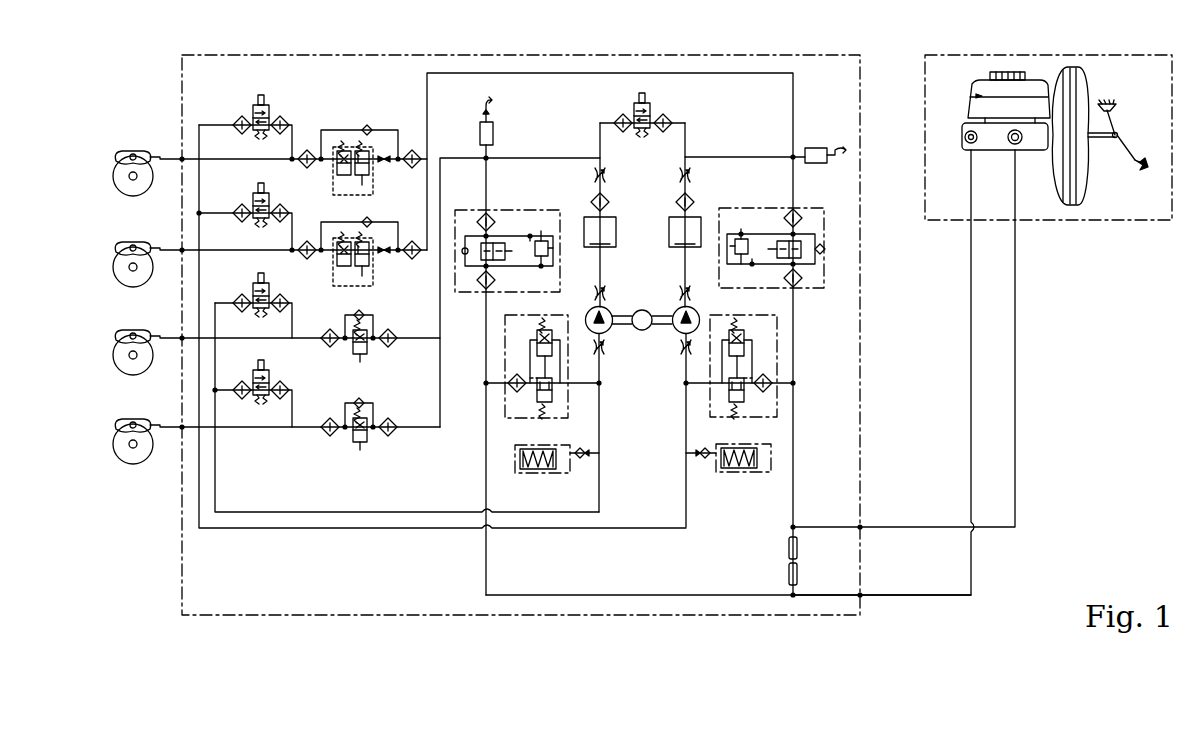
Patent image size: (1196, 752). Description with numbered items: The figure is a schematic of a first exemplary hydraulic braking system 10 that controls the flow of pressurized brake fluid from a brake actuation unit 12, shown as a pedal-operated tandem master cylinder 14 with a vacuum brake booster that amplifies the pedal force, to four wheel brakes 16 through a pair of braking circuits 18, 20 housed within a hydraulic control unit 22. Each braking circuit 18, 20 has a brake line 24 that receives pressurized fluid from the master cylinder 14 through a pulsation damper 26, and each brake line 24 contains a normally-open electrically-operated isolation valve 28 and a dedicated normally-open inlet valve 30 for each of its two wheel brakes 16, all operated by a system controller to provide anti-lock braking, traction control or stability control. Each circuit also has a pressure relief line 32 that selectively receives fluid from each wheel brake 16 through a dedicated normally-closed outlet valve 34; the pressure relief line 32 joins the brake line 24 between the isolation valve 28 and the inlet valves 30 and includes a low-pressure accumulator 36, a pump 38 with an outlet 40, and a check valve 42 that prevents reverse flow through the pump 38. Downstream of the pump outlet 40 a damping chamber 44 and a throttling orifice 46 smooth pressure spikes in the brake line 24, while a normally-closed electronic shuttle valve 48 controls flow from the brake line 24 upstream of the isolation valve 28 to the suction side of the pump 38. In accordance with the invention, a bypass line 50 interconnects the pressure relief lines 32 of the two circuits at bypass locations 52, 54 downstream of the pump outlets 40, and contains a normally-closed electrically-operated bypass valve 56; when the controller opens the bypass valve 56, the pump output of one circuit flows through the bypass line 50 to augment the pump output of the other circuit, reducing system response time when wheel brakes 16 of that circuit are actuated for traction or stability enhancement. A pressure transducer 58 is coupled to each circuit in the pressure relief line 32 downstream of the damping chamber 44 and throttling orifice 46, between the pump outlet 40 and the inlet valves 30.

The hydraulic braking system 10 is at (1090, 416).
The brake actuation unit 12 is at (1010, 55).
The tandem master cylinder 14 is at (1082, 190).
The wheel brakes 16 is at (123, 169).
The first braking circuit 18 is at (1016, 513).
The second braking circuit 20 is at (973, 562).
The hydraulic control unit 22 is at (857, 53).
The brake line 24 is at (793, 440).
The pulsation damper 26 is at (789, 545).
The isolation valve 28 is at (470, 293).
The inlet valve 30 is at (378, 118).
The pressure relief line 32 is at (435, 513).
The outlet valve 34 is at (273, 84).
The low-pressure accumulator 36 is at (570, 468).
The pump 38 is at (605, 331).
The pump outlet 40 is at (607, 311).
The check valve 42 is at (604, 291).
The damping chamber 44 is at (642, 232).
The throttling orifice 46 is at (595, 175).
The electronic shuttle valve 48 is at (777, 367).
The bypass line 50 is at (685, 122).
The bypass location 52 is at (685, 157).
The bypass location 54 is at (600, 157).
The bypass valve 56 is at (657, 95).
The pressure transducer 58 is at (494, 122).